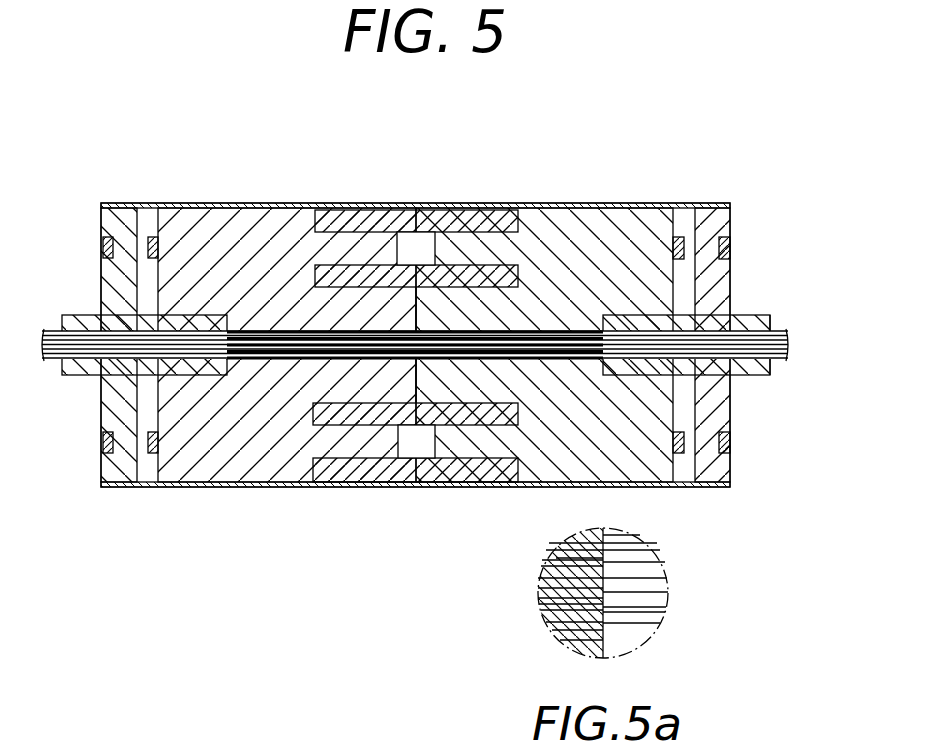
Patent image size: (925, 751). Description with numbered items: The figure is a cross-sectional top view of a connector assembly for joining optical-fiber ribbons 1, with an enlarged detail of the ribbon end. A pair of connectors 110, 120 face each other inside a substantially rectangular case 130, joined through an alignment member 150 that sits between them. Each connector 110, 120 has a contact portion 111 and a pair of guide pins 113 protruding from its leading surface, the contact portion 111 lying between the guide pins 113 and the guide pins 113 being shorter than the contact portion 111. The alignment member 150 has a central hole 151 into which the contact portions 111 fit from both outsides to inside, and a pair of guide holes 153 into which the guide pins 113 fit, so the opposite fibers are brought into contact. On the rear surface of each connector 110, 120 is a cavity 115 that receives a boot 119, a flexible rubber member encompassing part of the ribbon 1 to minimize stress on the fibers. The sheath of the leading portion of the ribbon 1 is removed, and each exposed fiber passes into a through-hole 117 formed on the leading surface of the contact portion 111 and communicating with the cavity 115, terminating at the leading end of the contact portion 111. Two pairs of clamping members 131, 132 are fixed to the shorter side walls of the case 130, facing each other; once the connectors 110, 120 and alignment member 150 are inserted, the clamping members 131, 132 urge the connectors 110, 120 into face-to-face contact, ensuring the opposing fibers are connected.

In FIG. 5, the optical-fiber ribbon 1 is at (55, 347).
In FIG. 5A, the optical-fiber ribbon 1 is at (642, 628).
In FIG. 5, the connector 110 is at (216, 230).
In FIG. 5, the contact portion 111 is at (447, 393).
In FIG. 5, the guide pins 113 is at (445, 215).
In FIG. 5, the cavity 115 is at (118, 325).
In FIG. 5A, the through-holes 117 is at (562, 568).
In FIG. 5, the boot 119 is at (735, 318).
In FIG. 5A, the boot 119 is at (622, 533).
In FIG. 5, the connector 120 is at (578, 232).
In FIG. 5A, the connector 120 is at (575, 645).
In FIG. 5, the case 130 is at (727, 205).
In FIG. 5, the clamping member 131 is at (150, 449).
In FIG. 5, the clamping member 132 is at (152, 237).
In FIG. 5, the alignment member 150 is at (482, 213).
In FIG. 5, the central hole 151 is at (470, 300).
In FIG. 5, the guide holes 153 is at (421, 240).